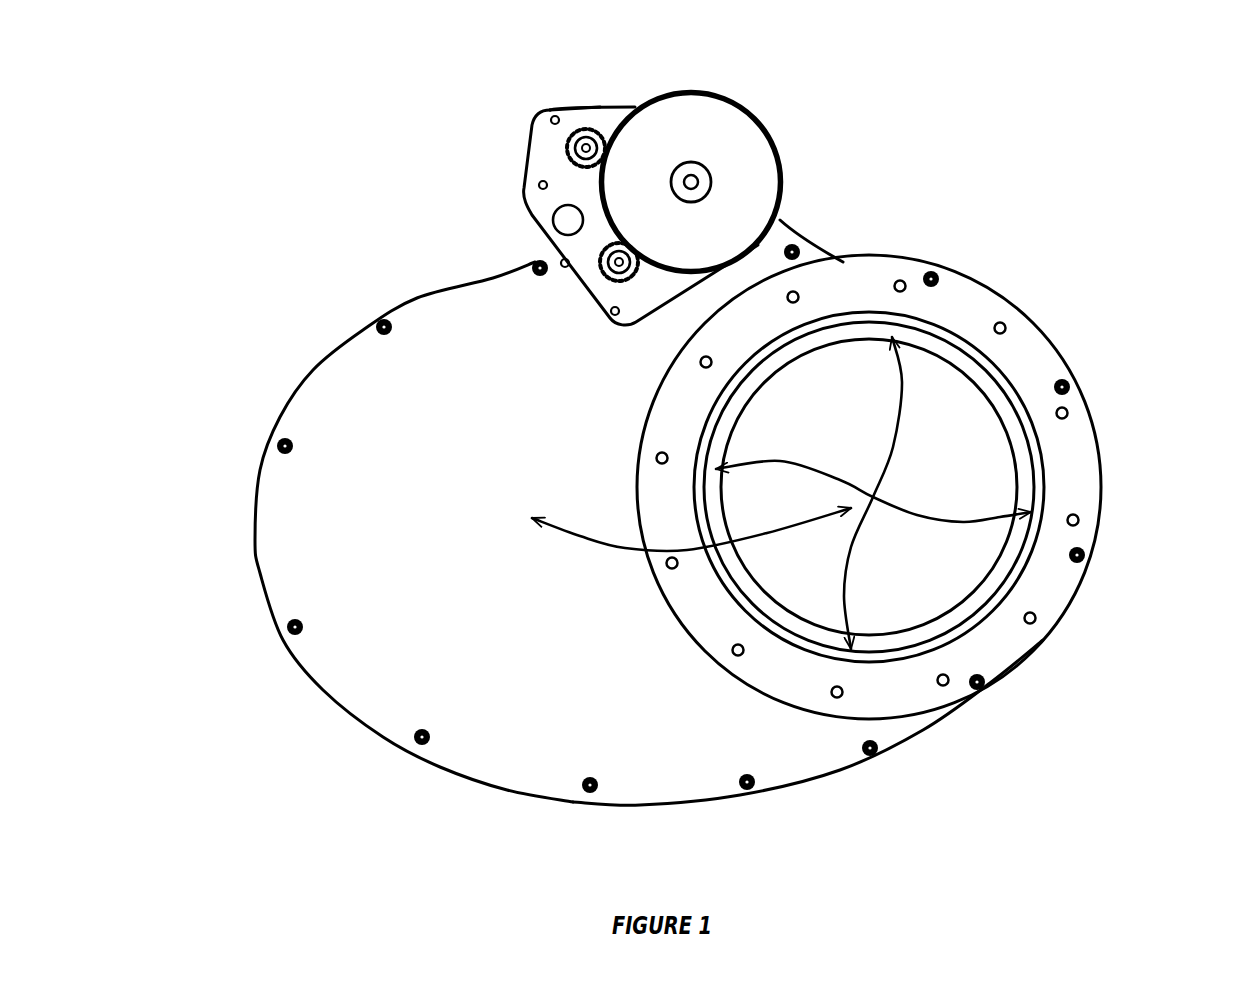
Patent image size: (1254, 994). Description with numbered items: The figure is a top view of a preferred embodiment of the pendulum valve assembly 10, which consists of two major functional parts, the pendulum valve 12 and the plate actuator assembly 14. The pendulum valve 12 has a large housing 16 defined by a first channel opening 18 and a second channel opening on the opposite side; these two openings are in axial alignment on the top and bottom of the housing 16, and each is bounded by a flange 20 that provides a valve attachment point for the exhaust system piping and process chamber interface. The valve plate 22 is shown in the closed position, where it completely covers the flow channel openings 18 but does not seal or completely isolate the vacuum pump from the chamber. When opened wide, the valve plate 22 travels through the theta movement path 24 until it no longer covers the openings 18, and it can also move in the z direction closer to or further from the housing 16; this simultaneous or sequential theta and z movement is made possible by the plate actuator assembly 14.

The pendulum valve assembly 10 is at (175, 138).
The pendulum valve 12 is at (1002, 237).
The plate actuator assembly 14 is at (790, 175).
The housing 16 is at (302, 568).
The first channel opening 18 is at (958, 518).
The flange 20 is at (1020, 647).
The valve plate 22 is at (958, 565).
The theta movement path 24 is at (627, 547).